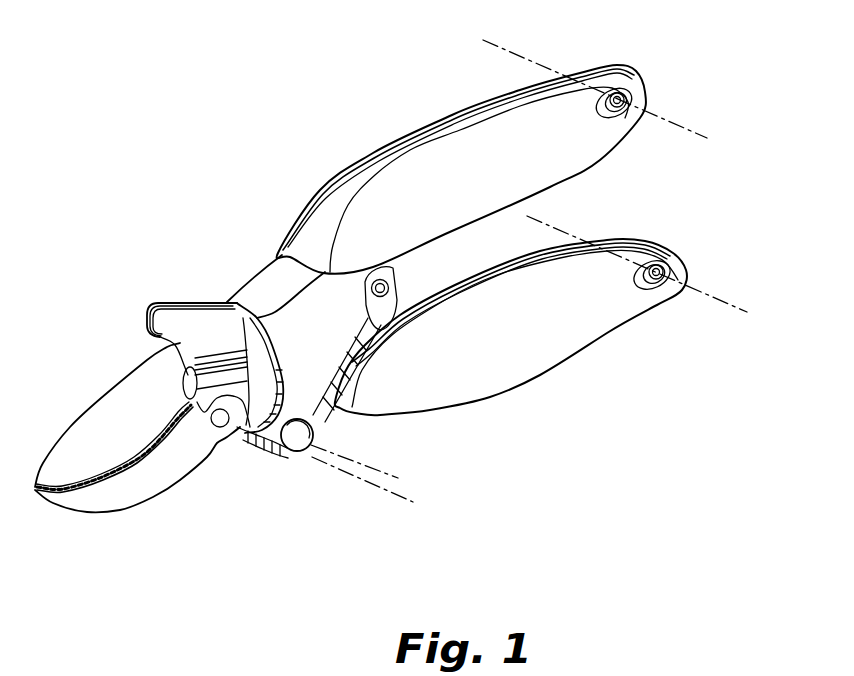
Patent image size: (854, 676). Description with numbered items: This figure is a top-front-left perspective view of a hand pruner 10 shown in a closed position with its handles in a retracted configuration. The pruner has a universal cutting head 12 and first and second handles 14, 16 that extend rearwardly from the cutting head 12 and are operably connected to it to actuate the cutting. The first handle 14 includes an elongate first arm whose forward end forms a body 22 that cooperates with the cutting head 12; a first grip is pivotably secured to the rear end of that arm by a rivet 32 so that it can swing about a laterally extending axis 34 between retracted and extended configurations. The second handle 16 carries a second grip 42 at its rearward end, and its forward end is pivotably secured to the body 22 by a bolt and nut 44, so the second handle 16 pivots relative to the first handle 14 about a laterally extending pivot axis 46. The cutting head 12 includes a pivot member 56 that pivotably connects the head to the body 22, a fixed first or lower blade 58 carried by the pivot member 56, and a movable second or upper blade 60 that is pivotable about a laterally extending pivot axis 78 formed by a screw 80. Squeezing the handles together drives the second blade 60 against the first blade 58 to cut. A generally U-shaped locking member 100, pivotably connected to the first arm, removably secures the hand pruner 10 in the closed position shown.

The hand pruner 10 is at (202, 213).
The universal cutting head 12 is at (185, 297).
The first handle 14 is at (452, 113).
The second handle 16 is at (530, 376).
The body 22 is at (253, 280).
The rivet 32 is at (608, 112).
The laterally extending axis 34 is at (687, 127).
The second grip 42 is at (578, 355).
The bolt and nut 44 is at (297, 447).
The pivot axis 46 is at (357, 447).
The pivot member 56 is at (207, 300).
The first blade 58 is at (130, 500).
The second blade 60 is at (107, 397).
The pivot axis 78 is at (357, 483).
The screw 80 is at (220, 423).
The locking member 100 is at (393, 292).